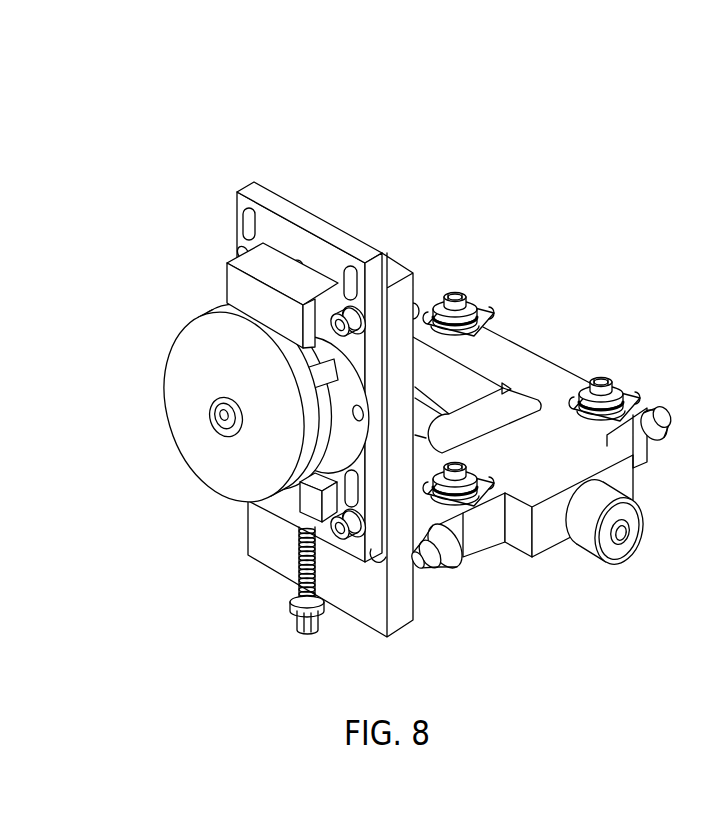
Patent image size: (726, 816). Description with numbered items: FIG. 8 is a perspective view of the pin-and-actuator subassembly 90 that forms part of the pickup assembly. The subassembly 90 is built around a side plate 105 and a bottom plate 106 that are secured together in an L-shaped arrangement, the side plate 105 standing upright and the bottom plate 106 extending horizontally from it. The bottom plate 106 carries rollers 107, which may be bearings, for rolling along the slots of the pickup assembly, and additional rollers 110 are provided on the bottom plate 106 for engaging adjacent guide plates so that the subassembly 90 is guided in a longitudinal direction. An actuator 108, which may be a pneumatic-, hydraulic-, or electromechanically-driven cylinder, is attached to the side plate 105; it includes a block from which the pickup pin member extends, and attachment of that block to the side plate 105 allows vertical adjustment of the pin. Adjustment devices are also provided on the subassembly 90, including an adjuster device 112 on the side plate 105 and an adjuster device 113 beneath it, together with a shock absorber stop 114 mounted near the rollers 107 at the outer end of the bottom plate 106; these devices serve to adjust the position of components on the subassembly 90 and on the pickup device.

The pin-and-actuator subassembly 90 is at (486, 220).
The side plate 105 is at (245, 190).
The bottom plate 106 is at (523, 342).
The rollers 107 is at (658, 438).
The actuator 108 is at (190, 458).
The rollers 110 is at (466, 298).
The adjuster device 112 is at (255, 236).
The adjuster device 113 is at (300, 552).
The shock absorber stop 114 is at (634, 546).